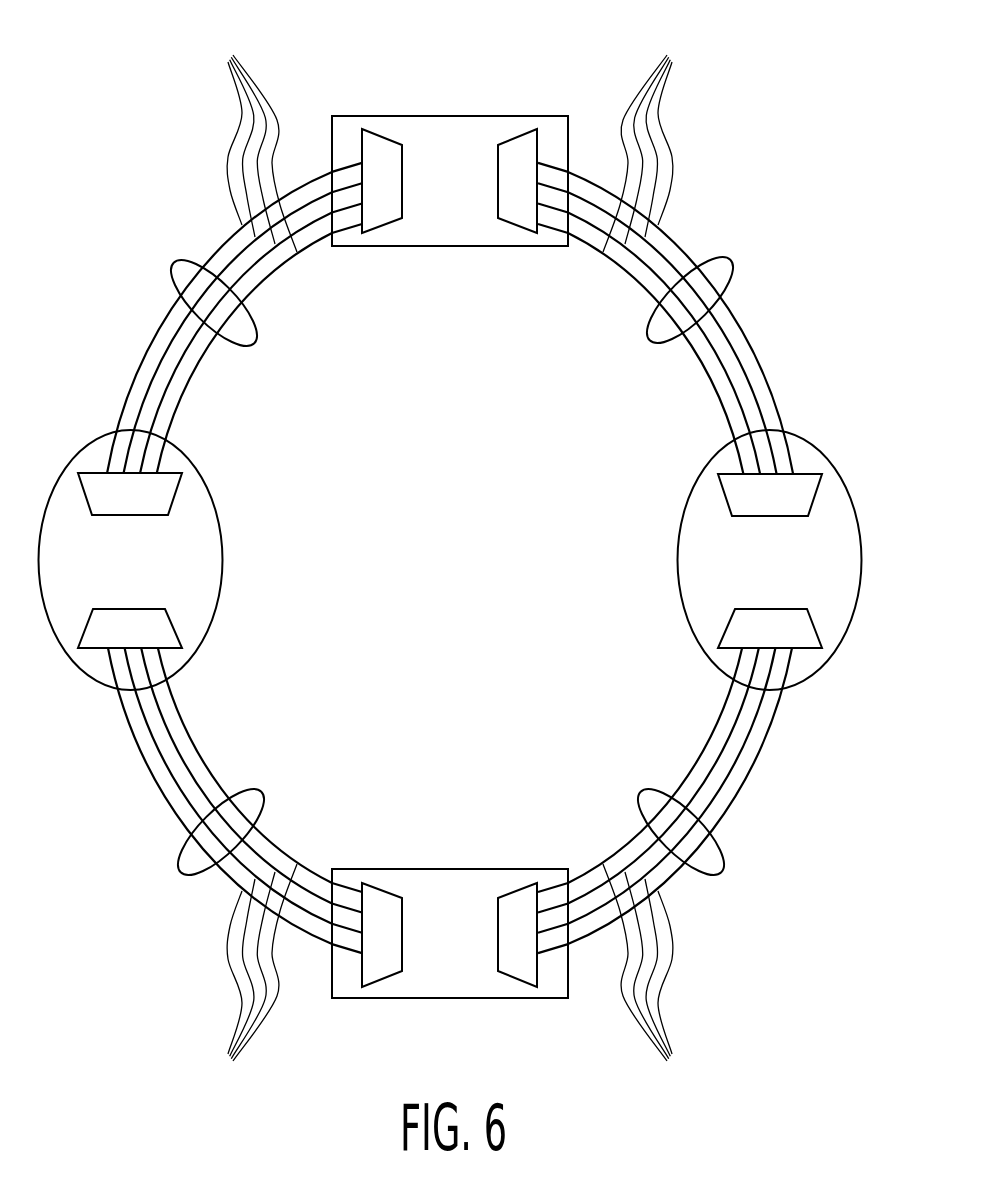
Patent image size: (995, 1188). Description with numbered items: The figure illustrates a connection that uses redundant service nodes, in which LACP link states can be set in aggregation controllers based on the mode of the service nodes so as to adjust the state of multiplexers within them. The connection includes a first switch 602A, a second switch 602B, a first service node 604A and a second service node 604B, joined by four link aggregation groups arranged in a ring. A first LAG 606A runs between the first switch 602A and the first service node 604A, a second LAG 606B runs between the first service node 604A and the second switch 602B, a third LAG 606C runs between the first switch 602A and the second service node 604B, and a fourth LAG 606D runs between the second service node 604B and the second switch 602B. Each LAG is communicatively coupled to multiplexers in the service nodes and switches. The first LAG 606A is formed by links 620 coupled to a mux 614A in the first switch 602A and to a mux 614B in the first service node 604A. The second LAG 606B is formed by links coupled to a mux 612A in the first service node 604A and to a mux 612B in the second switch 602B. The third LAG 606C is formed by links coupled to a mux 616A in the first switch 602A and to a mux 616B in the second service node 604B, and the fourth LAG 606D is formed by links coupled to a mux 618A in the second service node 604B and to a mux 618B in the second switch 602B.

The first switch 602A is at (448, 868).
The second switch 602B is at (449, 116).
The first service node 604A is at (223, 573).
The second service node 604B is at (677, 573).
The first LAG 606A is at (178, 870).
The second LAG 606B is at (173, 262).
The third LAG 606C is at (722, 870).
The fourth LAG 606D is at (730, 262).
The mux 612A is at (158, 496).
The mux 612B is at (378, 212).
The mux 614A is at (380, 903).
The mux 614B is at (163, 630).
The mux 616A is at (517, 903).
The mux 616B is at (737, 630).
The mux 618A is at (742, 497).
The mux 618B is at (520, 215).
The links 620 is at (437, 562).